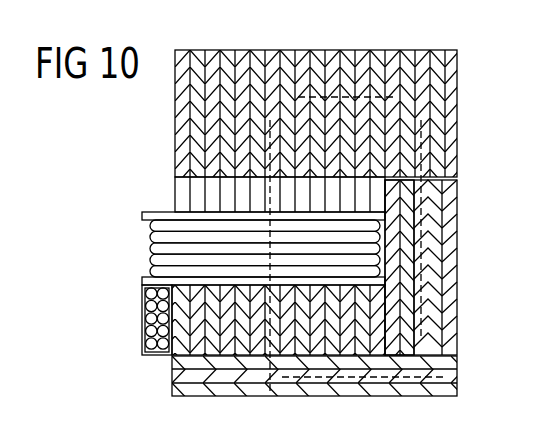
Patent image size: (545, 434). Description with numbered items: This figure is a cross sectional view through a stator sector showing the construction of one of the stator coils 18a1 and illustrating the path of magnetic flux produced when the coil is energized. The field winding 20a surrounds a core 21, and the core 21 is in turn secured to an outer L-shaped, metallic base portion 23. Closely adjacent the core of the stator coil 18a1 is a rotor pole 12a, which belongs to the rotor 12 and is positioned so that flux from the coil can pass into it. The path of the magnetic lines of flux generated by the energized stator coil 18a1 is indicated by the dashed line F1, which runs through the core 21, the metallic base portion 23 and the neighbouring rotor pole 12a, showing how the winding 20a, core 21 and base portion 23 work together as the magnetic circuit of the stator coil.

The core 12 is at (73, 433).
The rotor pole 12a is at (210, 122).
The stator coil 18a1 is at (162, 245).
The field winding 20a is at (146, 347).
The core 21 is at (285, 352).
The metallic base portion 23 is at (447, 377).
The magnetic flux path F1 is at (428, 235).